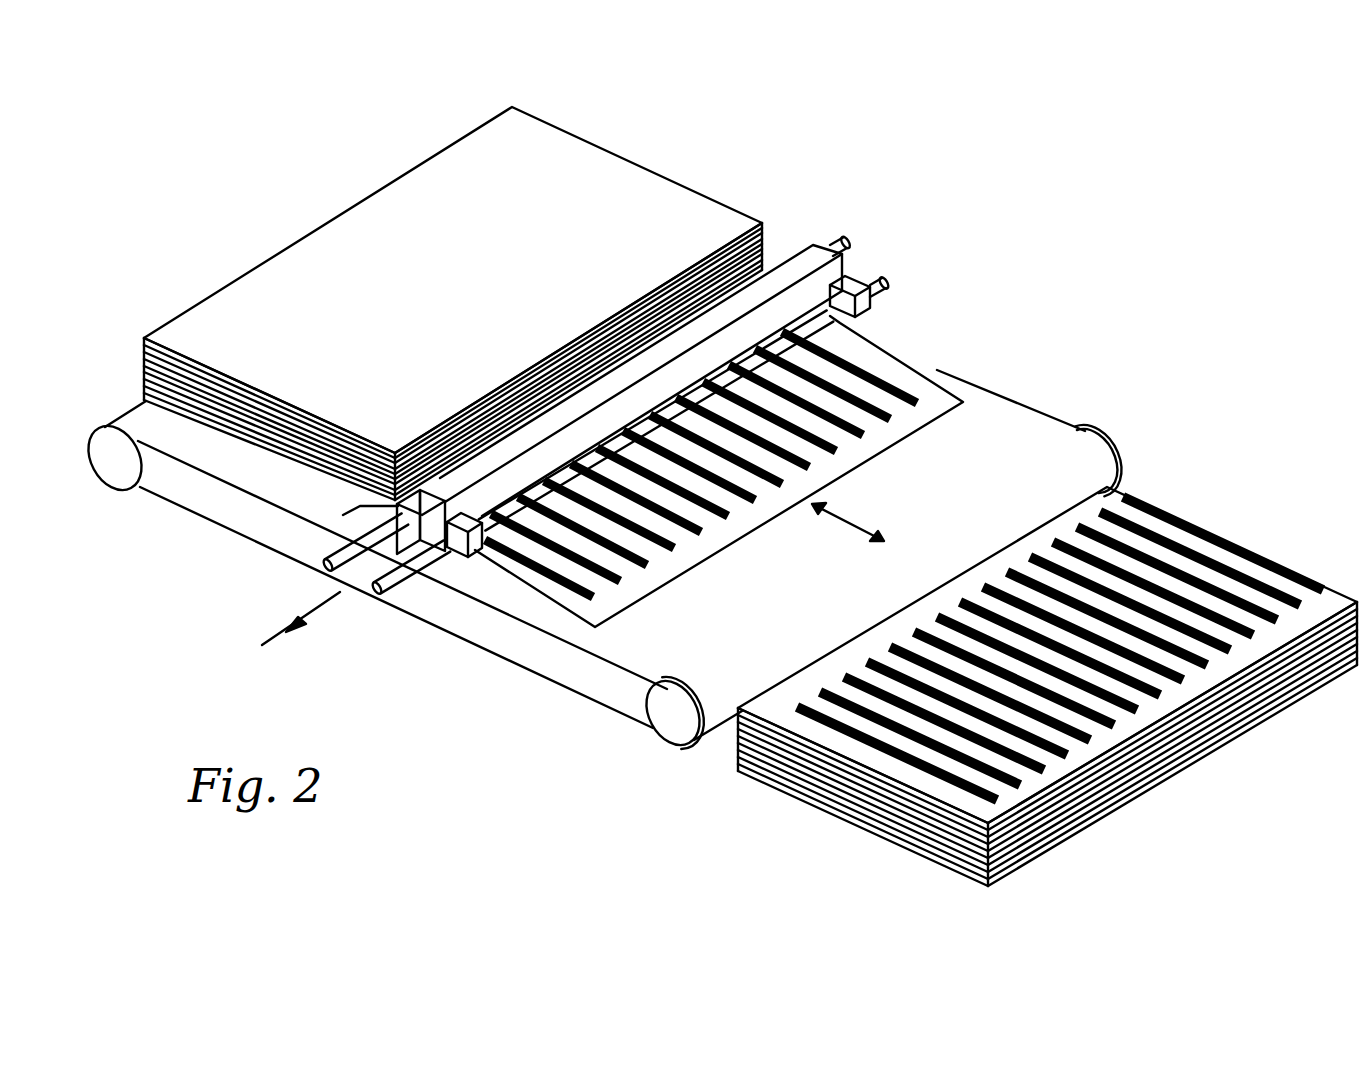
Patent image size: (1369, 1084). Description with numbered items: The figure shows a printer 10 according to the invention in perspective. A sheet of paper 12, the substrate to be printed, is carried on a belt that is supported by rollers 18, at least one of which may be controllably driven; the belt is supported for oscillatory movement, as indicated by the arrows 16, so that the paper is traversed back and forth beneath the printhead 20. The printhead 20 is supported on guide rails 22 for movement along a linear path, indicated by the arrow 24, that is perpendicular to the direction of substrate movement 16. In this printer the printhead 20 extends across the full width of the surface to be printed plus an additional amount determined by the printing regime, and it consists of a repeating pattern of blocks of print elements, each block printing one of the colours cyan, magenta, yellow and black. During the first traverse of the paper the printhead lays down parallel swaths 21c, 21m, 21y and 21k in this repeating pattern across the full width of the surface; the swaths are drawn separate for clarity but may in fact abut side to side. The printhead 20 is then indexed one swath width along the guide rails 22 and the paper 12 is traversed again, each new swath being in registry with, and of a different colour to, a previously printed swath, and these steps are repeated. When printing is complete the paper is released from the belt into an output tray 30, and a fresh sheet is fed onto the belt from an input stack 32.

The printing system 10 is at (1068, 250).
The sheet of paper 12 is at (930, 404).
The arrows indicating oscillatory movement 16 is at (848, 520).
The rollers 18 is at (114, 467).
The printhead 20 is at (654, 395).
The swath 21c is at (673, 552).
The swath 21m is at (648, 567).
The swath 21y is at (628, 583).
The swath 21k is at (597, 598).
The guide rails 22 is at (847, 245).
The arrow indicating printhead linear path 24 is at (317, 603).
The output tray 30 is at (1150, 523).
The input stack 32 is at (422, 276).